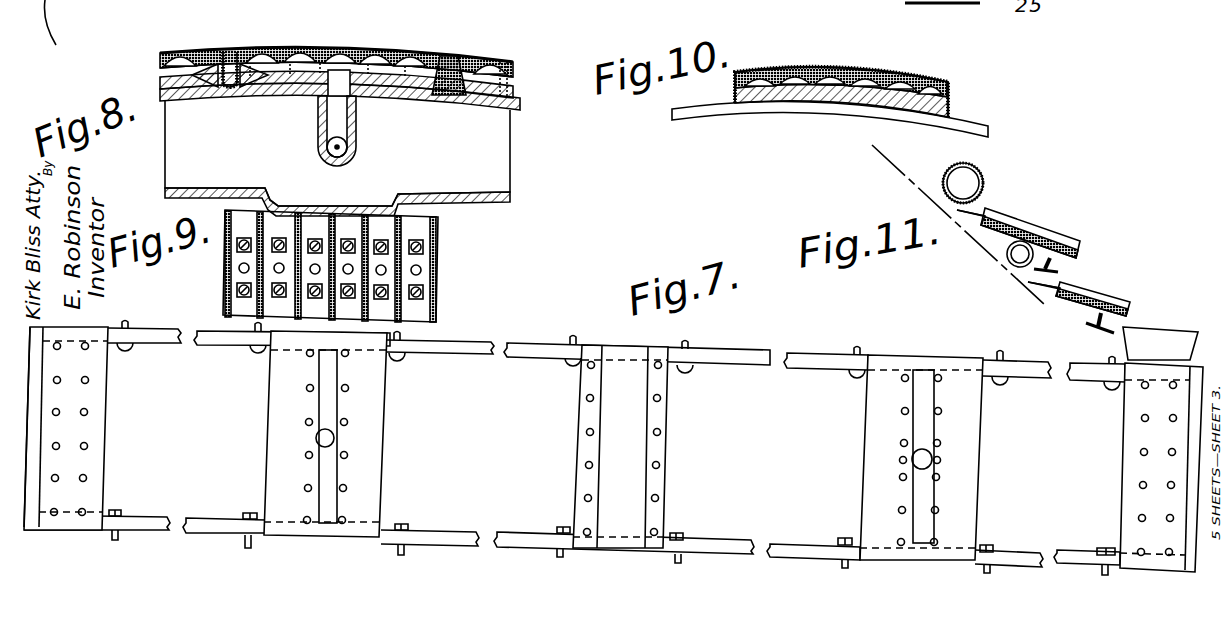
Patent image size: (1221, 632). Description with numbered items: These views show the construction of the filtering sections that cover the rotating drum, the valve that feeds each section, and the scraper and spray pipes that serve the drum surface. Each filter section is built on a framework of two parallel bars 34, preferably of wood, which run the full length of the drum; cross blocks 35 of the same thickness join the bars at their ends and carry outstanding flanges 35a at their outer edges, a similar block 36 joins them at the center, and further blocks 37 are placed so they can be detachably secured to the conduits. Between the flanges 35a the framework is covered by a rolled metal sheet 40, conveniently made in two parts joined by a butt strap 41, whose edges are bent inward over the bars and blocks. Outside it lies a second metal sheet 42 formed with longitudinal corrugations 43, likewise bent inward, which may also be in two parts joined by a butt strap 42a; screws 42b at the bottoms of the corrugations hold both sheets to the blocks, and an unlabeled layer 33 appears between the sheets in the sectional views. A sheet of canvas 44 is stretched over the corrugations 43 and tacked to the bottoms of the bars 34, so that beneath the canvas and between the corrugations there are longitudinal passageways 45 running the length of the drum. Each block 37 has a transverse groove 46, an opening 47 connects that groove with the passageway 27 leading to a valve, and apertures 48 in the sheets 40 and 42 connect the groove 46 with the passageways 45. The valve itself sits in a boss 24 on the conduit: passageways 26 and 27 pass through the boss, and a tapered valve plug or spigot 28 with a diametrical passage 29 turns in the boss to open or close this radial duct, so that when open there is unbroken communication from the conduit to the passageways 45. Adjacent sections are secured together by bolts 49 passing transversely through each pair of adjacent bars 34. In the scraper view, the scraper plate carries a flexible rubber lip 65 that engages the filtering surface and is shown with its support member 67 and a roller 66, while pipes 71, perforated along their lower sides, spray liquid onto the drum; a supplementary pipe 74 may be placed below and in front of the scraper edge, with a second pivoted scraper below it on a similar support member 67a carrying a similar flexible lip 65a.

In FIG. 8, the boss 24 is at (347, 141).
In FIG. 8, the passageway 26 is at (350, 162).
In FIG. 8, the passageway 27 is at (345, 116).
In FIG. 8, the valve plug or spigot 28 is at (330, 158).
In FIG. 8, the diametrical passage 29 is at (350, 148).
In FIG. 8, the facing layer 33 is at (336, 51).
In FIG. 10, the facing layer 33 is at (857, 61).
In FIG. 8, the parallel bars 34 is at (240, 89).
In FIG. 10, the parallel bars 34 is at (750, 104).
In FIG. 7, the parallel bars 34 is at (475, 339).
In FIG. 7, the cross bars or blocks 35 is at (90, 401).
In FIG. 7, the outstanding flanges 35a is at (44, 343).
In FIG. 10, the cross bar or block 36 is at (870, 101).
In FIG. 7, the cross bar or block 36 is at (657, 456).
In FIG. 8, the blocks 37 is at (290, 135).
In FIG. 7, the blocks 37 is at (370, 454).
In FIG. 8, the rolled metal sheet 40 is at (300, 54).
In FIG. 10, the rolled metal sheet 40 is at (916, 81).
In FIG. 10, the butt strap 41 is at (796, 99).
In FIG. 8, the second sheet of metal 42 is at (273, 83).
In FIG. 9, the second sheet of metal 42 is at (418, 282).
In FIG. 10, the second sheet of metal 42 is at (782, 70).
In FIG. 10, the butt strap 42a is at (770, 97).
In FIG. 8, the screws 42b is at (297, 52).
In FIG. 9, the screws 42b is at (420, 250).
In FIG. 10, the screws 42b is at (892, 76).
In FIG. 8, the longitudinal corrugations 43 is at (397, 60).
In FIG. 9, the longitudinal corrugations 43 is at (400, 233).
In FIG. 10, the longitudinal corrugations 43 is at (886, 70).
In FIG. 8, the sheet of canvas 44 is at (460, 61).
In FIG. 10, the sheet of canvas 44 is at (746, 72).
In FIG. 8, the longitudinal passageways 45 is at (194, 52).
In FIG. 10, the longitudinal passageways 45 is at (833, 70).
In FIG. 8, the groove 46 is at (428, 101).
In FIG. 7, the groove 46 is at (322, 407).
In FIG. 7, the opening 47 is at (317, 437).
In FIG. 8, the apertures 48 is at (313, 97).
In FIG. 9, the apertures 48 is at (240, 270).
In FIG. 7, the bolts 49 is at (258, 349).
In FIG. 11, the flexible lip 65 is at (980, 206).
In FIG. 11, the flexible lip 65a is at (1025, 296).
In FIG. 11, the roller 66 is at (1050, 256).
In FIG. 11, the rail 67 is at (1035, 233).
In FIG. 11, the lower rail 67a is at (1112, 302).
In FIG. 11, the pipes 71 is at (978, 171).
In FIG. 11, the supplementary pipe 74 is at (1027, 228).